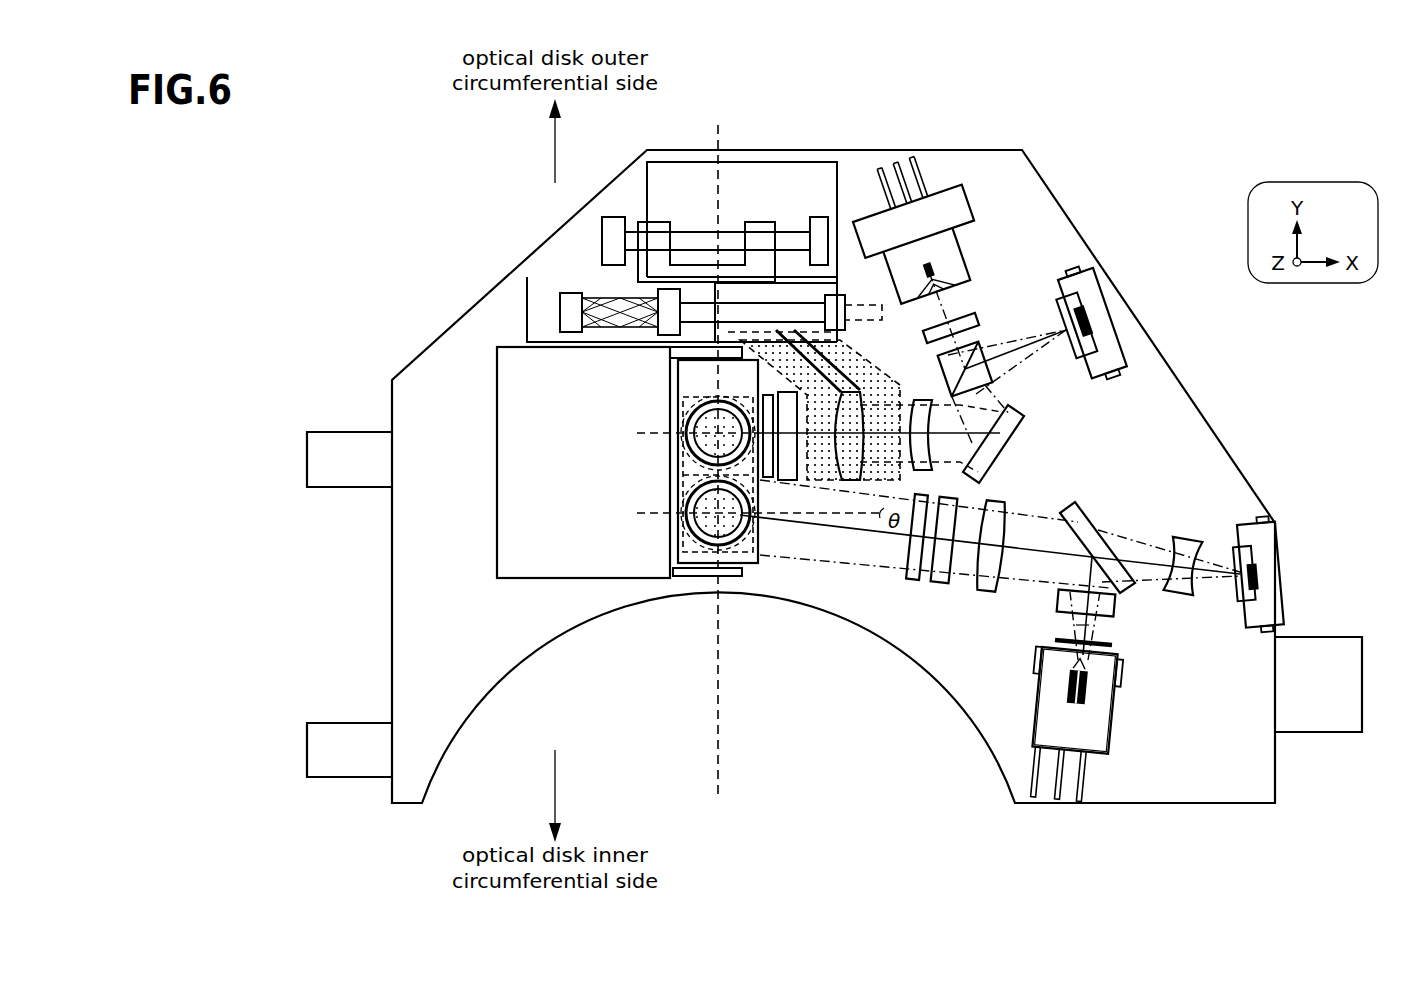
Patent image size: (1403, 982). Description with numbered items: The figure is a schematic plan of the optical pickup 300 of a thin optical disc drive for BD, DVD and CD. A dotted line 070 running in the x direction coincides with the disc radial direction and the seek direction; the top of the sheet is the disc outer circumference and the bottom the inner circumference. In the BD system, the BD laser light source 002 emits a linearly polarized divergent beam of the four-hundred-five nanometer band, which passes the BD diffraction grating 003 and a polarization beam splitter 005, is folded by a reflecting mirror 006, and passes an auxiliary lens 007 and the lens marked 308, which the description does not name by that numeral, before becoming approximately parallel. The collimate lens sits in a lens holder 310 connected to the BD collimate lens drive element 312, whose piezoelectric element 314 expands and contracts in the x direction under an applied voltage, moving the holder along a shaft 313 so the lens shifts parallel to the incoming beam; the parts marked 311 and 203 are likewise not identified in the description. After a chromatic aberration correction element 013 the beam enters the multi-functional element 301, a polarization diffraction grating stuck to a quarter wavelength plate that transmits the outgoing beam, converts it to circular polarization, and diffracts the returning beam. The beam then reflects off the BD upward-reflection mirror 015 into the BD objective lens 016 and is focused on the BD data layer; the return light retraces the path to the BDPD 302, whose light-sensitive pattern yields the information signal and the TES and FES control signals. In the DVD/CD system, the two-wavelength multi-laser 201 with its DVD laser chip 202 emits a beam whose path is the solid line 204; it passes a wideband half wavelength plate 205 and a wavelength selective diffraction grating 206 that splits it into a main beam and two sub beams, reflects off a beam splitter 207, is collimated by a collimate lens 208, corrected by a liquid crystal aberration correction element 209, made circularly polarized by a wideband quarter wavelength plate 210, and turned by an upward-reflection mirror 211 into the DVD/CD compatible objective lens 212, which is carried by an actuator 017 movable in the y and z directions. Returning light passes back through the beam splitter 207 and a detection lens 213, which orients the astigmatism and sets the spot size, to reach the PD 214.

The BD laser light source 002 is at (953, 207).
The BD diffraction grating 003 is at (943, 300).
The polarization beam splitter 005 is at (1000, 386).
The reflecting mirror 006 is at (1015, 437).
The auxiliary lens 007 is at (924, 468).
The chromatic aberration correction element 013 is at (788, 480).
The BD upward-reflection mirror 015 is at (685, 405).
The BD objective lens 016 is at (685, 462).
The actuator 017 is at (512, 494).
The dotted line 070 is at (720, 707).
The two-wavelength multi-laser 201 is at (1090, 733).
The DVD laser chip 202 is at (1092, 690).
The laser package 203 is at (1040, 688).
The solid line 204 is at (1080, 628).
The wideband half wavelength plate 205 is at (1114, 645).
The wavelength selective diffraction grating 206 is at (1117, 603).
The beam splitter 207 is at (1090, 511).
The collimate lens 208 is at (988, 593).
The liquid crystal aberration correction element 209 is at (935, 583).
The wideband quarter wavelength plate 210 is at (912, 580).
The upward-reflection mirror 211 is at (688, 570).
The DVD/CD compatible objective lens 212 is at (688, 525).
The detection lens 213 is at (1193, 533).
The PD 214 is at (1262, 552).
The optical pickup 300 is at (503, 303).
The multi-functional element 301 is at (768, 480).
The BDPD 302 is at (1090, 287).
The collimator lens 308 is at (860, 468).
The lens holder 310 is at (835, 352).
The reflecting surface 311 is at (882, 373).
The BD collimate lens drive element 312 is at (755, 180).
The shaft 313 is at (780, 312).
The piezoelectric element 314 is at (607, 300).